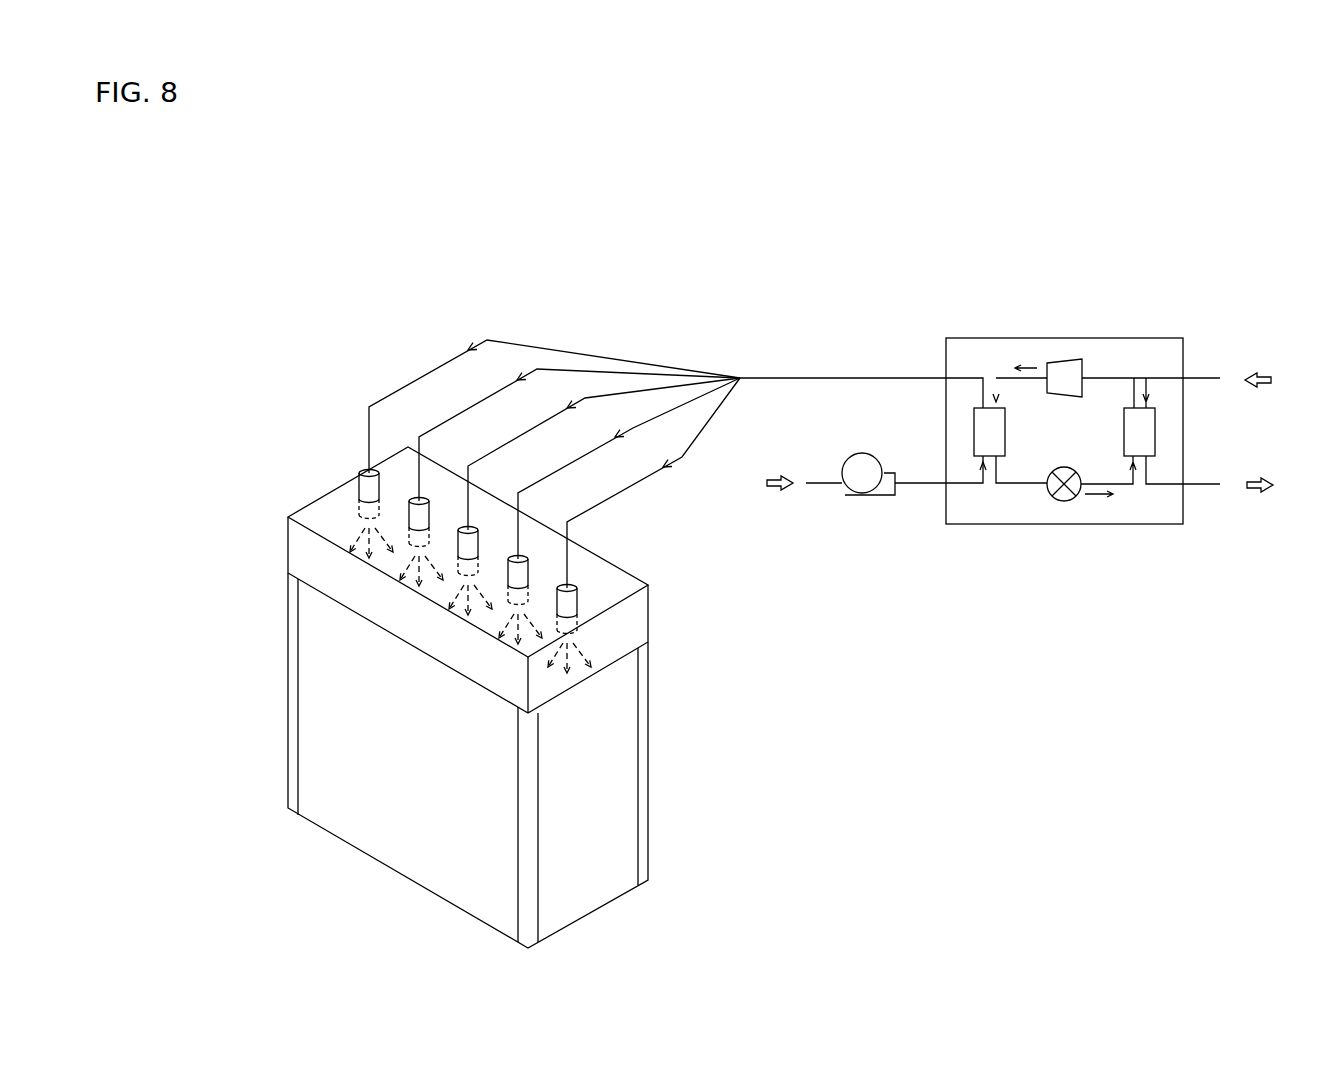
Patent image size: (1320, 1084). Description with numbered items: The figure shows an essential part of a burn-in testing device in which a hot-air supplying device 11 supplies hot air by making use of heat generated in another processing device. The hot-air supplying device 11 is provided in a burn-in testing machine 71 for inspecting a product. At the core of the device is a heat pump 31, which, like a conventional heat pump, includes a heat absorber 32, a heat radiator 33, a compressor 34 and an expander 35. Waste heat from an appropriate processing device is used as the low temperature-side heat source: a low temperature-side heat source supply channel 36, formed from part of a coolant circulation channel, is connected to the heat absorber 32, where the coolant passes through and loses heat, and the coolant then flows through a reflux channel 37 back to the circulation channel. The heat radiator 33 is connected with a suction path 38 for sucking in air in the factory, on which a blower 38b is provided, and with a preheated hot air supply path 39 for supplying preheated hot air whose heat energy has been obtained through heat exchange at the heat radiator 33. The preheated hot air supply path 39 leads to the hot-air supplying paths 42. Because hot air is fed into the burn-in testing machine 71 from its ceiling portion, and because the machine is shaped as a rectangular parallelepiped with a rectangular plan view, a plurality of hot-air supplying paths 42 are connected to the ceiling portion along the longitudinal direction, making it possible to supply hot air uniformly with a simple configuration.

The hot-air supplying device 11 is at (951, 219).
The heat pump 31 is at (1112, 338).
The heat absorber 32 is at (1155, 437).
The heat radiator 33 is at (974, 433).
The compressor 34 is at (1070, 358).
The expander 35 is at (1060, 502).
The low temperature-side heat source supply channel 36 is at (1207, 378).
The reflux channel 37 is at (1202, 485).
The suction path 38 is at (917, 487).
The blower 38b is at (850, 497).
The preheated hot air supply path 39 is at (864, 378).
The hot-air supplying path 42 is at (540, 480).
The burn-in testing machine 71 is at (293, 503).